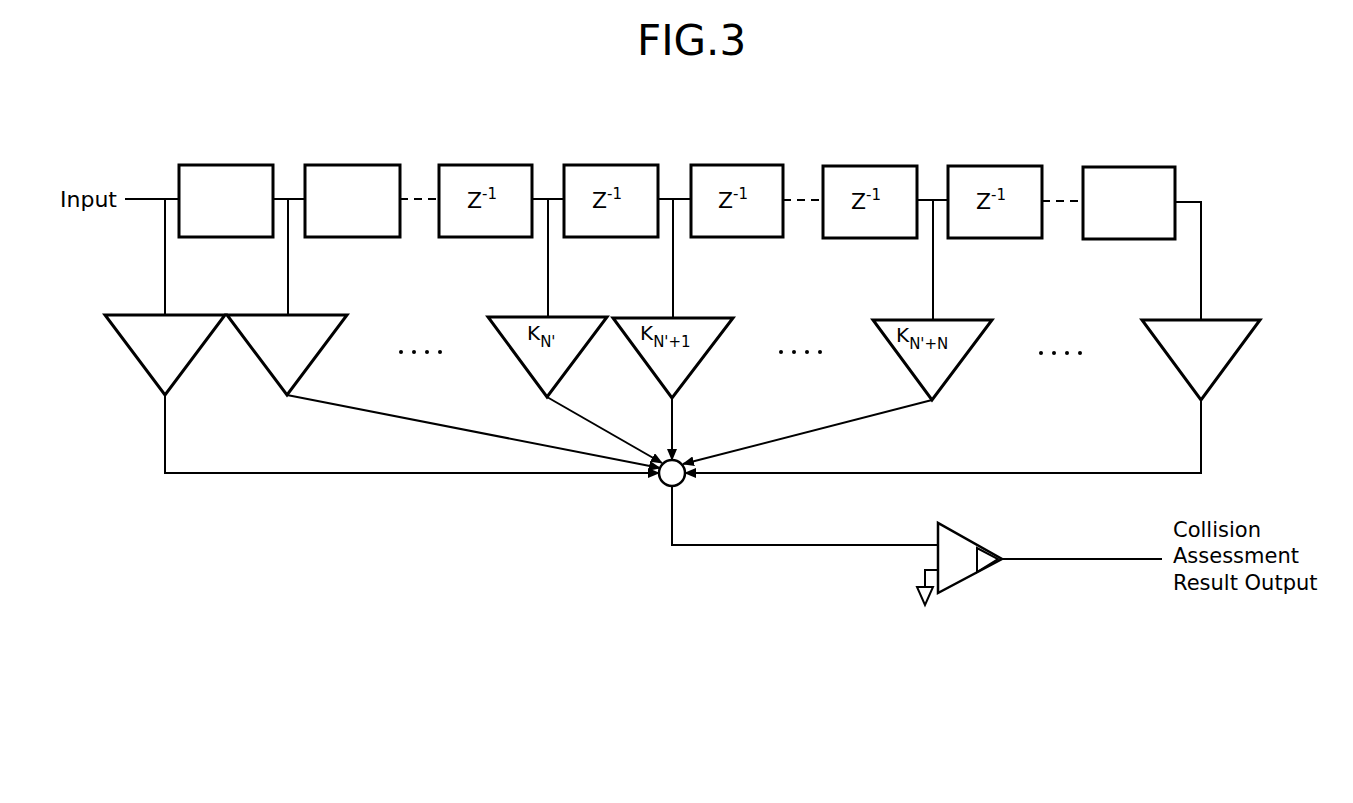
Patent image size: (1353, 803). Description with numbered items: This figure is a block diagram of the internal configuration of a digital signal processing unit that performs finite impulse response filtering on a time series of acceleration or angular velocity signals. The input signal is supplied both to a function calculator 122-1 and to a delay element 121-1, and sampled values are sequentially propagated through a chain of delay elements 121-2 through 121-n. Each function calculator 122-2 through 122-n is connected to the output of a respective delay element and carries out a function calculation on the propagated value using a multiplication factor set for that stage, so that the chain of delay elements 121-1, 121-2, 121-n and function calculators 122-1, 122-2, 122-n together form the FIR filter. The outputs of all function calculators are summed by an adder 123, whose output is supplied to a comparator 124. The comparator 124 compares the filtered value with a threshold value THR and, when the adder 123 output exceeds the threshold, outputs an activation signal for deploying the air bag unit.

The delay element 121-1 is at (236, 164).
The delay element 121-2 is at (362, 164).
The delay element 121-n is at (1146, 166).
The function calculator 122-1 is at (138, 362).
The function calculator 122-2 is at (260, 360).
The function calculator 122-n is at (1236, 320).
The adder 123 is at (686, 449).
The comparator 124 is at (965, 539).